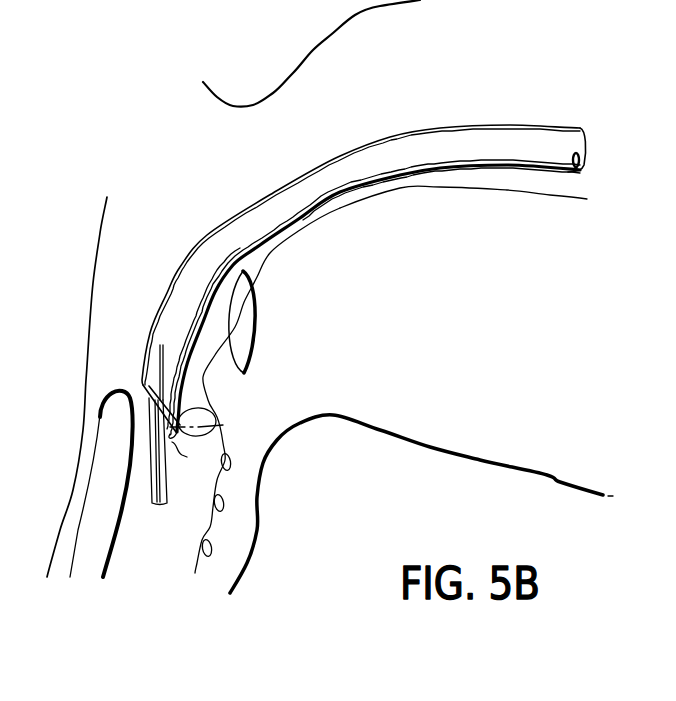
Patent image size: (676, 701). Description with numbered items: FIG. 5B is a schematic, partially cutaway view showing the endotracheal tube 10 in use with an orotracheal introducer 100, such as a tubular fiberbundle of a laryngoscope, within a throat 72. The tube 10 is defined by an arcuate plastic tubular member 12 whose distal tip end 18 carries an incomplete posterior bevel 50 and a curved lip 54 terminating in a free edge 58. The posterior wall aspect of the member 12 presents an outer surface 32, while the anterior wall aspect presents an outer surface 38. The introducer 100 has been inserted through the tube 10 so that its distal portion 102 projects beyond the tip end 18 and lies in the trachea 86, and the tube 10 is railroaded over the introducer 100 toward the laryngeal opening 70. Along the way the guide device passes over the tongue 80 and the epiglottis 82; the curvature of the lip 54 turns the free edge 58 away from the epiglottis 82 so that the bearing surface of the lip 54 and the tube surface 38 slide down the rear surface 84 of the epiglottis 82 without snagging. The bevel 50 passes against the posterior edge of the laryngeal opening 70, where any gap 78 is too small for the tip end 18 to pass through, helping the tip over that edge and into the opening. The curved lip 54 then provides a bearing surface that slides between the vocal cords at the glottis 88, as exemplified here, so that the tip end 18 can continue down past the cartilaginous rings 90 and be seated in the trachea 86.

The endotracheal tube 10 is at (492, 108).
The tubular member 12 is at (378, 139).
The distal tip end 18 is at (153, 350).
The outer surface of posterior wall aspect 32 is at (210, 236).
The outer surface of anterior wall aspect 38 is at (273, 233).
The posterior bevel 50 is at (122, 400).
The lip 54 is at (224, 425).
The free edge 58 is at (193, 459).
The laryngeal opening 70 is at (185, 387).
The throat 72 is at (273, 150).
The gap 78 is at (143, 381).
The tongue 80 is at (450, 229).
The epiglottis 82 is at (236, 298).
The rear surface of epiglottis 84 is at (203, 316).
The trachea 86 is at (162, 578).
The glottis 88 is at (125, 423).
The cartilaginous rings 90 is at (231, 463).
The introducer 100 is at (139, 461).
The distal portion of introducer 102 is at (153, 487).